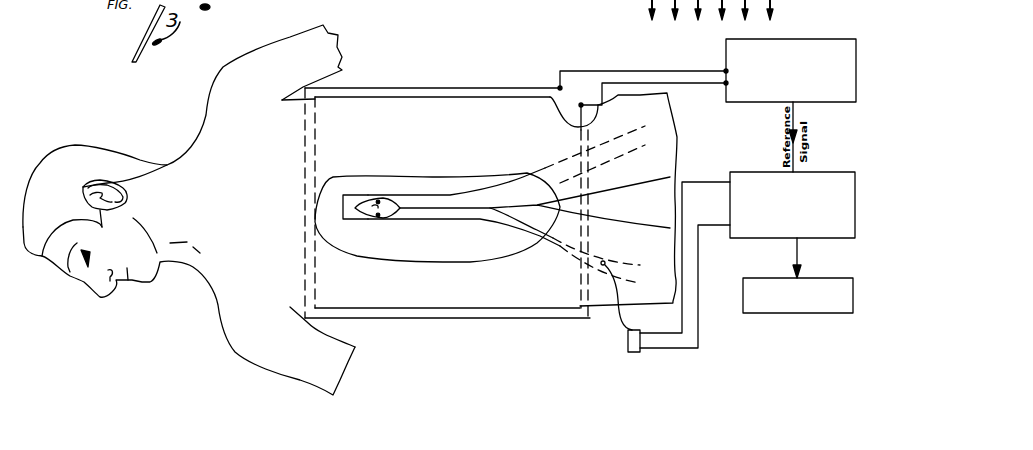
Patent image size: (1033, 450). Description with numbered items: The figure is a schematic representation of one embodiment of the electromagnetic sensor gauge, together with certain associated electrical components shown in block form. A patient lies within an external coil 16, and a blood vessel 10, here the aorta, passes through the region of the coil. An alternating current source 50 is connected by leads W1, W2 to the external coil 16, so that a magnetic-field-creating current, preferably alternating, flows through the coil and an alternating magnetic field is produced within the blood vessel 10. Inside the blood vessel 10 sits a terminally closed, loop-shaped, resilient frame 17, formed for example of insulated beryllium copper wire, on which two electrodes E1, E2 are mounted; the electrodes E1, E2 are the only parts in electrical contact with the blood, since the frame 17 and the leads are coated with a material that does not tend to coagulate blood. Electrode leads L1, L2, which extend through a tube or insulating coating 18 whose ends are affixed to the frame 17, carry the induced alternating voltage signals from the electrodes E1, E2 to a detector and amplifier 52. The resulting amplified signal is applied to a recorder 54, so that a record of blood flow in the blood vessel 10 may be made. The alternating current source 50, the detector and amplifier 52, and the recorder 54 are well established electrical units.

The blood vessel 10 is at (450, 195).
The external coil 16 is at (457, 321).
The resilient frame 17 is at (372, 210).
The tube or insulating coating 18 is at (620, 327).
The alternating current source 50 is at (843, 38).
The detector and amplifier 52 is at (820, 171).
The recorder 54 is at (827, 277).
The electrode E1 is at (379, 202).
The electrode E2 is at (378, 216).
The lead W1 is at (670, 70).
The lead W2 is at (680, 80).
The electrode lead L1 is at (638, 302).
The electrode lead L2 is at (698, 335).